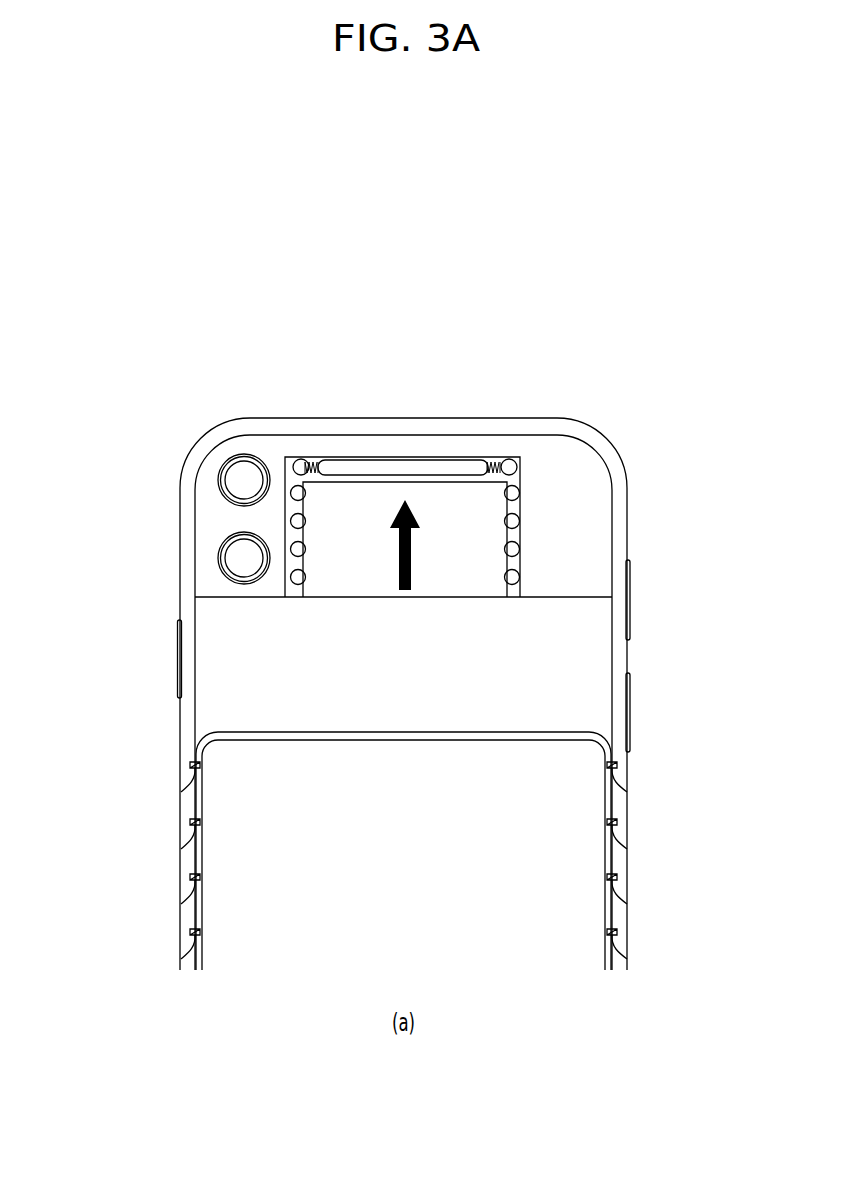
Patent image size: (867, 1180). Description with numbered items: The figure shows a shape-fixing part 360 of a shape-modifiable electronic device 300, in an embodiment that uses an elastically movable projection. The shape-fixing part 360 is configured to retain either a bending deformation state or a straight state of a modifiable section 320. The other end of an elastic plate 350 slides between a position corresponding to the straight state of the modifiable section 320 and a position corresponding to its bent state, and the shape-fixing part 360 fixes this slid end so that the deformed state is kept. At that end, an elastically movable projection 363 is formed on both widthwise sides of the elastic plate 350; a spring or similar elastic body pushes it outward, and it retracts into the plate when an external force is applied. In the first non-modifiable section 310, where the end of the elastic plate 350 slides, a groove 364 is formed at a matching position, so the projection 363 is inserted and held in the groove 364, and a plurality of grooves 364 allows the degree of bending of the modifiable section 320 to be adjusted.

The shape-modifiable electronic device 300 is at (637, 390).
The first non-modifiable section 310 is at (155, 501).
The modifiable section 320 is at (672, 865).
The elastic plate 350 is at (238, 683).
The shape-fixing part 360 is at (308, 429).
The elastically movable projection 363 is at (514, 468).
The groove 364 is at (516, 494).